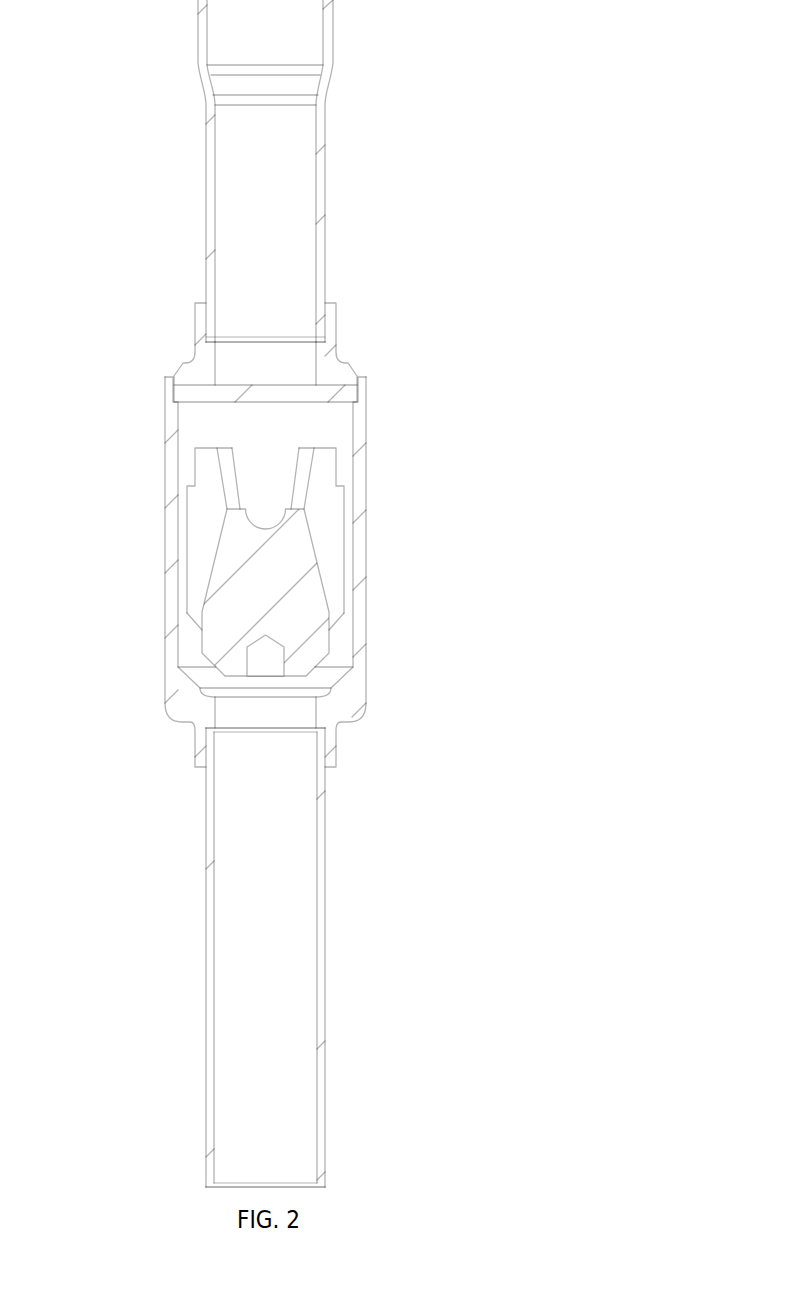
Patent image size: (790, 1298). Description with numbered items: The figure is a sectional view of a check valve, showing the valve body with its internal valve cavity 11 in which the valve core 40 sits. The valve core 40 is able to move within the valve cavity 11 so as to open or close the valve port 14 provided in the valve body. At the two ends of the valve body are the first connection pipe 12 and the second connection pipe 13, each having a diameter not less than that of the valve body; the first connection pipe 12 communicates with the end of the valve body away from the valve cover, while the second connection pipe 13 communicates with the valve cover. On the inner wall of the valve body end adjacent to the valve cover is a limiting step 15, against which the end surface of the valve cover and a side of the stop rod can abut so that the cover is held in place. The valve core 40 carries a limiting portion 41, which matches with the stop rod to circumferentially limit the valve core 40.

The valve cavity 11 is at (335, 445).
The first connection pipe 12 is at (326, 1048).
The second connection pipe 13 is at (325, 230).
The valve port 14 is at (272, 707).
The limiting step 15 is at (173, 377).
The valve core 40 is at (362, 629).
The limiting portion 41 is at (155, 515).